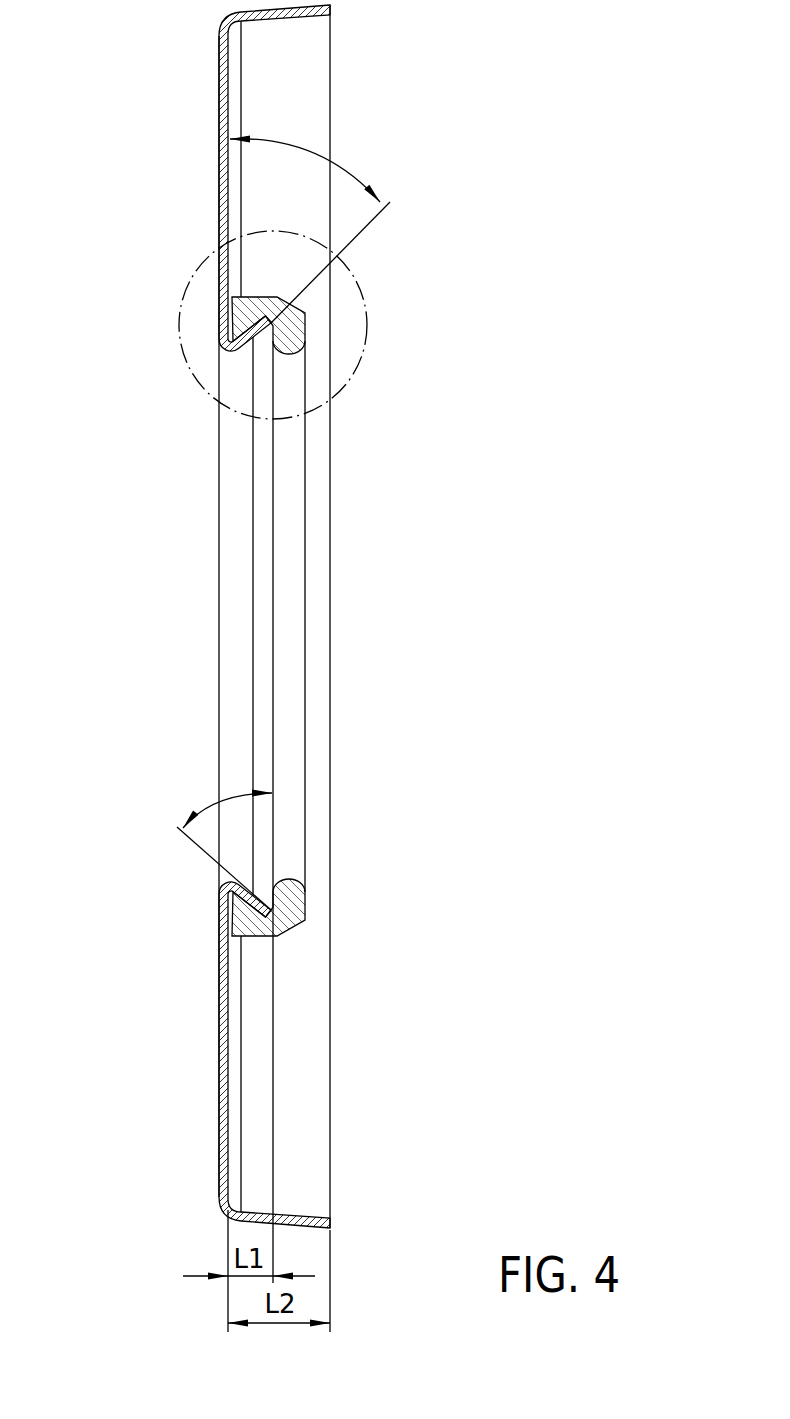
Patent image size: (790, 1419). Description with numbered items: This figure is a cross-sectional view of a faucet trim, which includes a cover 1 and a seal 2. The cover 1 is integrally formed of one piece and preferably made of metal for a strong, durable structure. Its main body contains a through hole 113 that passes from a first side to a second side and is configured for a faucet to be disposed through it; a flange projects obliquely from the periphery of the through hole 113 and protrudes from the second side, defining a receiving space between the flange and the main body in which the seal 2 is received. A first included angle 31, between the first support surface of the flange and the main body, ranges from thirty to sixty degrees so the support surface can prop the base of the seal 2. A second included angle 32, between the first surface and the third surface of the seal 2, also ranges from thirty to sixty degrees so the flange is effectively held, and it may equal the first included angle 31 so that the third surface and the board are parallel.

The cover 1 is at (253, 644).
The through hole 113 is at (225, 550).
The seal 2 is at (318, 302).
The first included angle 31 is at (313, 153).
The second included angle 32 is at (220, 802).